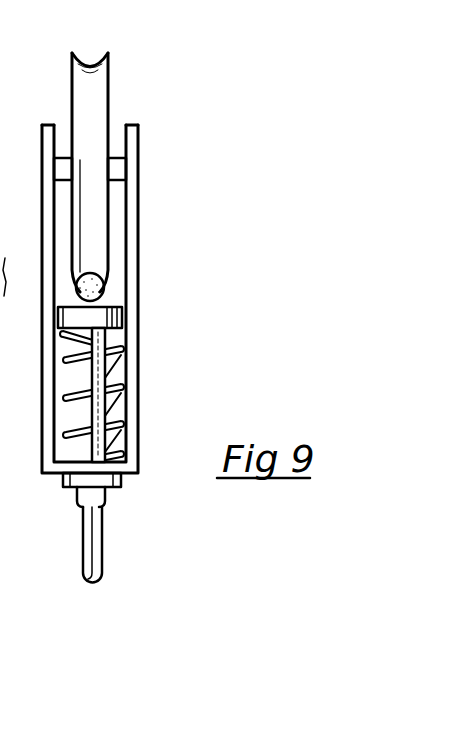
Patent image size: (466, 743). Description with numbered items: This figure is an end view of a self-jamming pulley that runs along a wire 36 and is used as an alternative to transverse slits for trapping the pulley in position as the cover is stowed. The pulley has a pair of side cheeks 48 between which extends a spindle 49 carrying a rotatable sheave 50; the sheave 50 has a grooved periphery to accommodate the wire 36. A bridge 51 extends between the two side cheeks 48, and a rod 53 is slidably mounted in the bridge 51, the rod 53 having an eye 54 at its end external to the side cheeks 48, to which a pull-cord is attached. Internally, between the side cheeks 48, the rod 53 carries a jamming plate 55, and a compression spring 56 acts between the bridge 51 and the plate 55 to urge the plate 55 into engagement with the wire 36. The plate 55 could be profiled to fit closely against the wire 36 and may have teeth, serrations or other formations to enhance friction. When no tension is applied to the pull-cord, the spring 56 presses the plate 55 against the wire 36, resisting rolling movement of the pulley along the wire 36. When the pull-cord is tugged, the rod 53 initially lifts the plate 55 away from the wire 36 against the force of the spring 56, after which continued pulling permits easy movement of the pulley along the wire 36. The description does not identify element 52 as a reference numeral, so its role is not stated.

The side cheeks 48 is at (41, 126).
The rotatable sheave 50 is at (107, 73).
The spindle 49 is at (110, 162).
The wire 36 is at (104, 286).
The jamming plate 55 is at (122, 317).
The rod 53 is at (119, 357).
The compression spring 56 is at (106, 418).
The bridge 51 is at (121, 477).
The neck 52 is at (121, 488).
The eye 54 is at (86, 552).